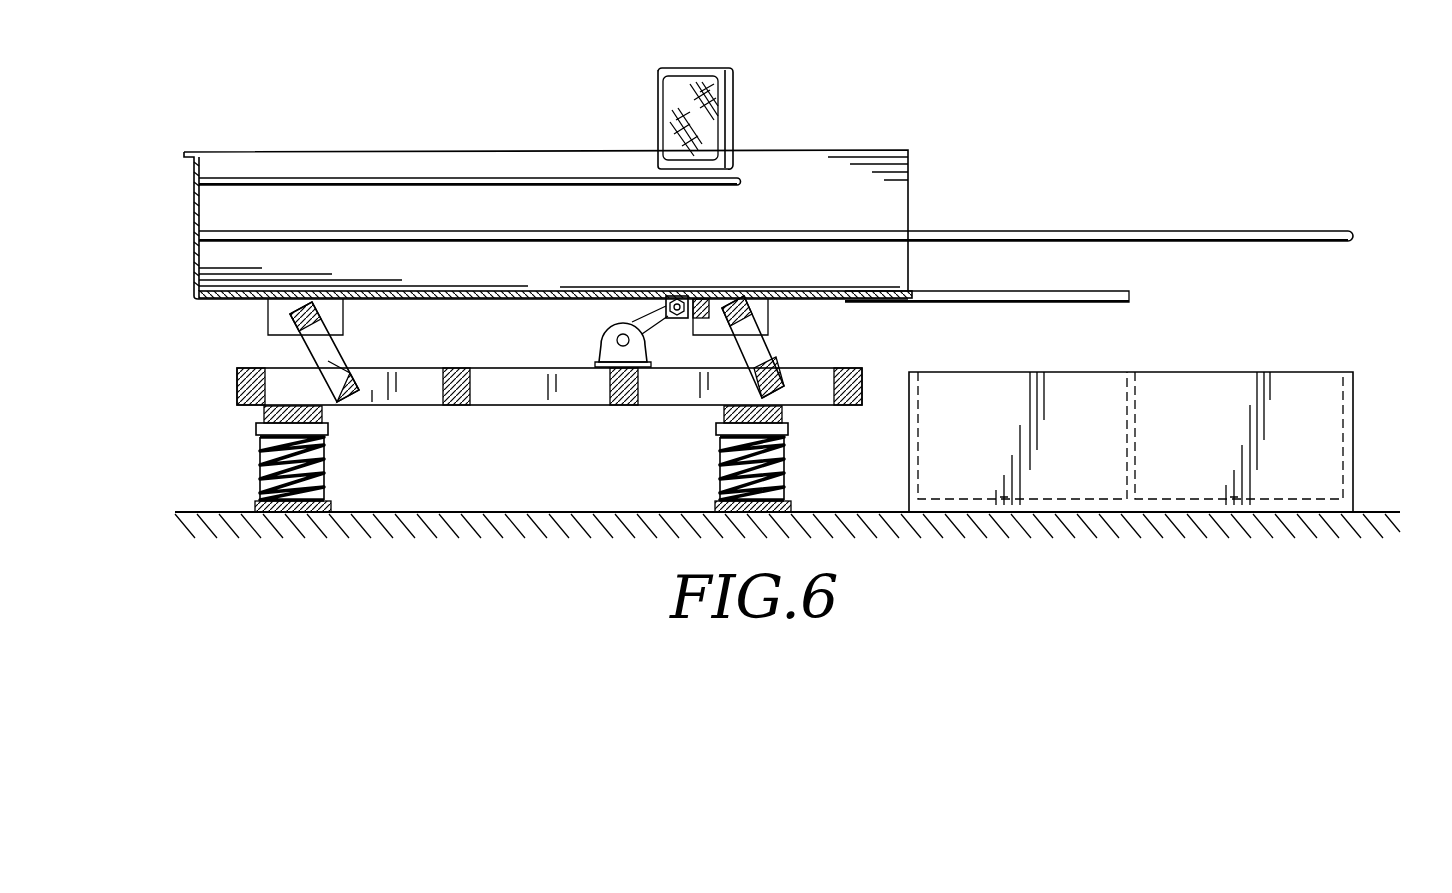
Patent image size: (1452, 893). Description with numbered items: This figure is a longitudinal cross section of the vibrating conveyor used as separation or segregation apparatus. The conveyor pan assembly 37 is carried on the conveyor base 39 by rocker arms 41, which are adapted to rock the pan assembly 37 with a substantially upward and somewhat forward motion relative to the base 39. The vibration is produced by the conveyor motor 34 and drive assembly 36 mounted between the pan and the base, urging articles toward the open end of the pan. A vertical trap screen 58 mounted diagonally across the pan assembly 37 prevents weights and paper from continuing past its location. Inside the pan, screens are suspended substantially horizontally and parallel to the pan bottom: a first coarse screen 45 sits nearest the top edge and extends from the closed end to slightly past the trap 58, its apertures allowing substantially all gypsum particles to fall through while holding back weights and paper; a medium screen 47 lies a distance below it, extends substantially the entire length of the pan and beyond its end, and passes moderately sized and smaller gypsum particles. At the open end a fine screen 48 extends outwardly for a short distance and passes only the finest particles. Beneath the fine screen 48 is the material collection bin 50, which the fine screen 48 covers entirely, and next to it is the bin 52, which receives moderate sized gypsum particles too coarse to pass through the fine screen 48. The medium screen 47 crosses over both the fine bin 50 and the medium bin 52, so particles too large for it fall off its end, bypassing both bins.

The conveyor motor 34 is at (606, 326).
The drive assembly 36 is at (662, 311).
The conveyor pan assembly 37 is at (388, 163).
The conveyor base 39 is at (452, 407).
The rocker arms 41 is at (351, 357).
The coarse screen 45 is at (483, 180).
The medium screen 47 is at (770, 229).
The fine screen 48 is at (1100, 290).
The material collection bin 50 is at (1025, 372).
The bin 52 is at (1298, 372).
The vertical trap screen 58 is at (735, 119).